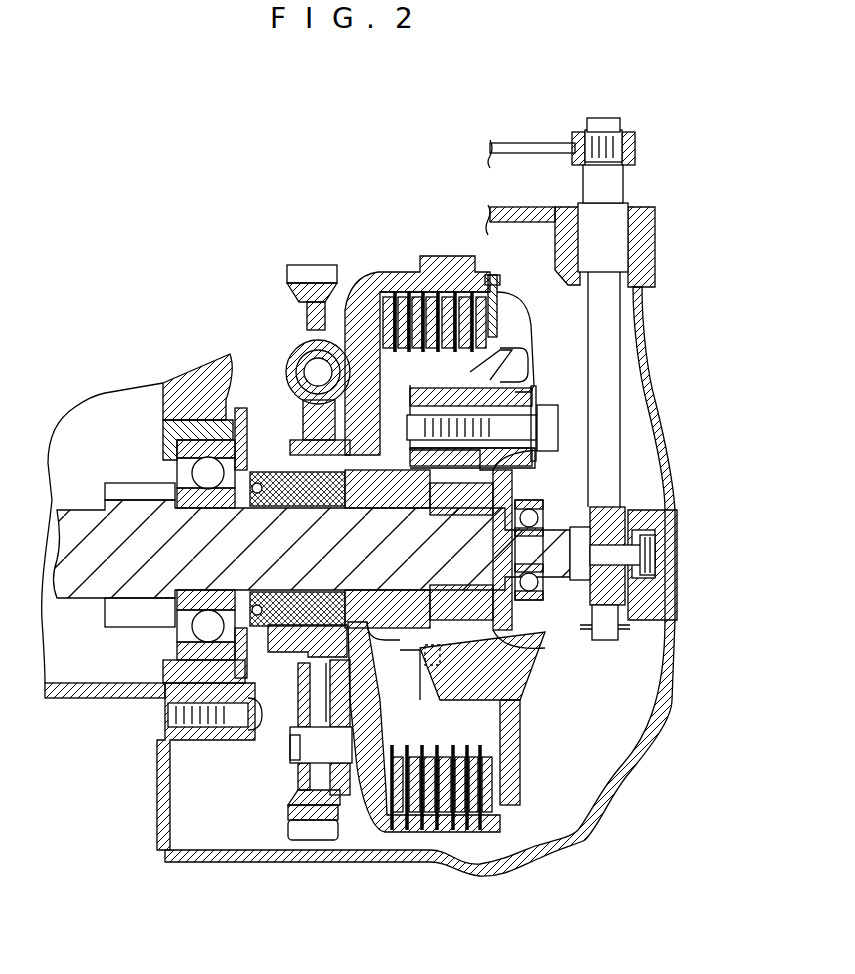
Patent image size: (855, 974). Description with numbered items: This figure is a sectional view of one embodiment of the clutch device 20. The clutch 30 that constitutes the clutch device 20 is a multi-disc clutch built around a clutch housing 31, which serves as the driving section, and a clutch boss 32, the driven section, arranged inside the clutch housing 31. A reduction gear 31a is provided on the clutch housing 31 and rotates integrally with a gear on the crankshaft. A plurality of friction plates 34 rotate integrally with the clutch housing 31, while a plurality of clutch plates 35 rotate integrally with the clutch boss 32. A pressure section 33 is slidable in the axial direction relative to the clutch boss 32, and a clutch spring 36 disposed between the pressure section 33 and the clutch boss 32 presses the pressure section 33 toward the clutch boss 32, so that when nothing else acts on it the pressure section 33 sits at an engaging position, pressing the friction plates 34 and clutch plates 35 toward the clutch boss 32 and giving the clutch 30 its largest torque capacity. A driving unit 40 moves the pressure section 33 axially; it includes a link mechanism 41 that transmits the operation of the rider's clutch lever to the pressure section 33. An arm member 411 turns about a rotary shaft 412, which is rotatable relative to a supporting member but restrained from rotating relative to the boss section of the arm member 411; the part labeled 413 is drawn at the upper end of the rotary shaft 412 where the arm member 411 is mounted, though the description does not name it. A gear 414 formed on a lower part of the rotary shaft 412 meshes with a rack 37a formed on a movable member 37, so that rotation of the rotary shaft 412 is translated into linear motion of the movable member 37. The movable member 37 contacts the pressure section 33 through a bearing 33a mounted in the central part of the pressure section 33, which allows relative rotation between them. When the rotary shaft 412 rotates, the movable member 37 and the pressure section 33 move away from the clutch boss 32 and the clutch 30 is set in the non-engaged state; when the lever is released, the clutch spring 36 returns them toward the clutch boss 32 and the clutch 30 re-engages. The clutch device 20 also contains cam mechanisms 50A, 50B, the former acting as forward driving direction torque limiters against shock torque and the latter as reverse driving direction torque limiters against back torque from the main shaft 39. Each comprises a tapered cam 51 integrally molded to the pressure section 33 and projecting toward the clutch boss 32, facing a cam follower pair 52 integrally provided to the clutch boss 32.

The clutch device 20 is at (367, 155).
The clutch 30 is at (403, 241).
The clutch housing 31 is at (358, 270).
The reduction gear 31a is at (318, 270).
The clutch boss 32 is at (300, 326).
The pressure section 33 is at (538, 366).
The bearing 33a is at (548, 625).
The friction plates 34 is at (410, 833).
The clutch plates 35 is at (448, 833).
The clutch spring 36 is at (538, 388).
The movable member 37 is at (555, 535).
The rack 37a is at (655, 561).
The main shaft 39 is at (87, 502).
The driving unit 40 is at (700, 181).
The link mechanism 41 is at (608, 265).
The arm member 411 is at (527, 147).
The rotary shaft 412 is at (612, 430).
The adjusting nut 413 is at (634, 112).
The gear 414 is at (660, 540).
The cam mechanisms 50A is at (591, 720).
The cam mechanisms 50B is at (441, 685).
The cam 51 is at (455, 660).
The cam follower pair 52 is at (415, 668).